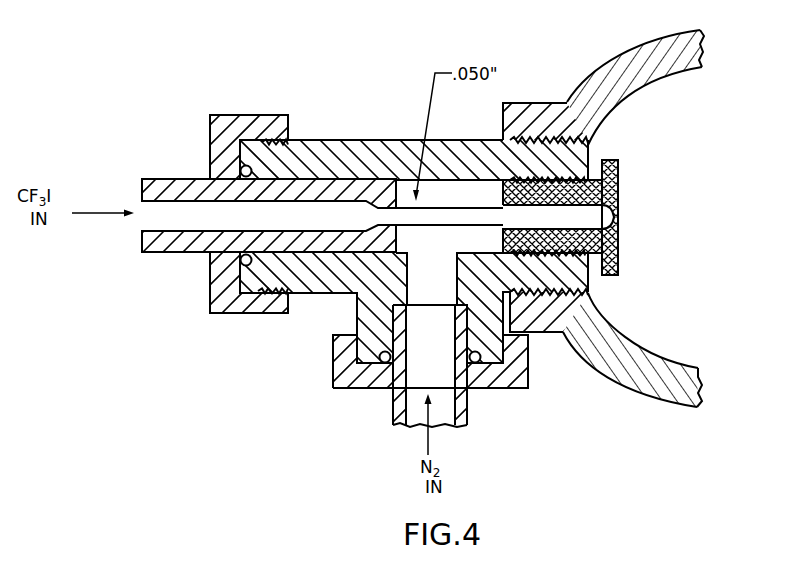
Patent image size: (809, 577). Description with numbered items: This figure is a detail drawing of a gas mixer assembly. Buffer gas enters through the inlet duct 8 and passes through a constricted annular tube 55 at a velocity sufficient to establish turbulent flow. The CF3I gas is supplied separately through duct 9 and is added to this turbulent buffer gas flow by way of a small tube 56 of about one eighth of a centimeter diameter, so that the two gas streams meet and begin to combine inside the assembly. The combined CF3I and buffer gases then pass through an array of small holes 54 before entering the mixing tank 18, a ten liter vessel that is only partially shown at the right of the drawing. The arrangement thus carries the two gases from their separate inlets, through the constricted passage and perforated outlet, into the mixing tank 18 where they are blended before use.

The duct 9 is at (192, 198).
The tube 56 is at (460, 214).
The constricted annular tube 55 is at (585, 170).
The array of small holes 54 is at (601, 160).
The mixing tank 18 is at (660, 75).
The inlet duct 8 is at (467, 393).